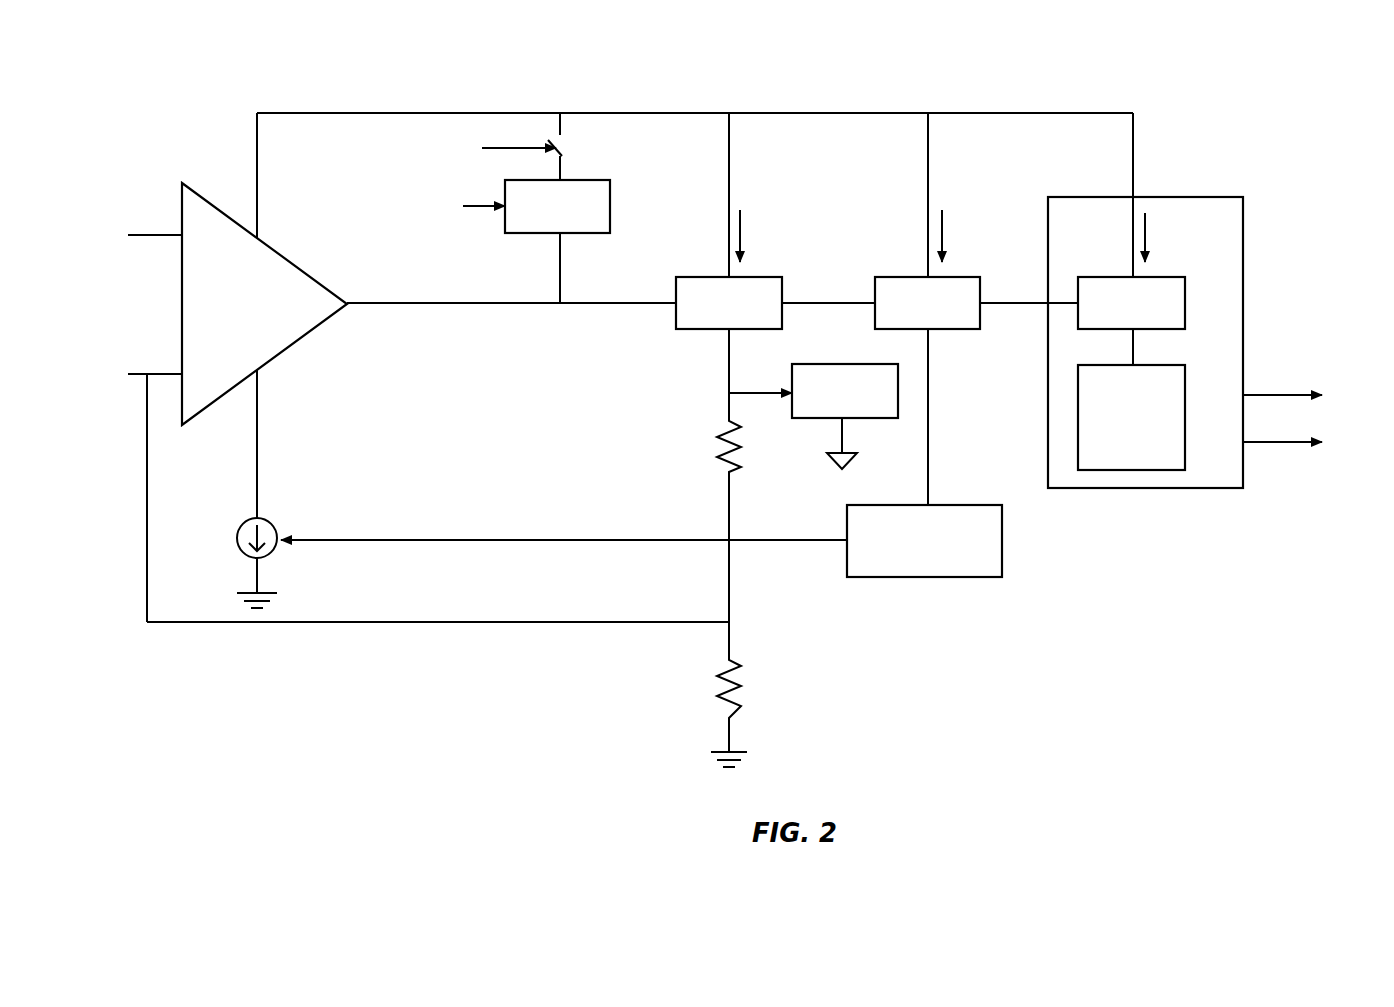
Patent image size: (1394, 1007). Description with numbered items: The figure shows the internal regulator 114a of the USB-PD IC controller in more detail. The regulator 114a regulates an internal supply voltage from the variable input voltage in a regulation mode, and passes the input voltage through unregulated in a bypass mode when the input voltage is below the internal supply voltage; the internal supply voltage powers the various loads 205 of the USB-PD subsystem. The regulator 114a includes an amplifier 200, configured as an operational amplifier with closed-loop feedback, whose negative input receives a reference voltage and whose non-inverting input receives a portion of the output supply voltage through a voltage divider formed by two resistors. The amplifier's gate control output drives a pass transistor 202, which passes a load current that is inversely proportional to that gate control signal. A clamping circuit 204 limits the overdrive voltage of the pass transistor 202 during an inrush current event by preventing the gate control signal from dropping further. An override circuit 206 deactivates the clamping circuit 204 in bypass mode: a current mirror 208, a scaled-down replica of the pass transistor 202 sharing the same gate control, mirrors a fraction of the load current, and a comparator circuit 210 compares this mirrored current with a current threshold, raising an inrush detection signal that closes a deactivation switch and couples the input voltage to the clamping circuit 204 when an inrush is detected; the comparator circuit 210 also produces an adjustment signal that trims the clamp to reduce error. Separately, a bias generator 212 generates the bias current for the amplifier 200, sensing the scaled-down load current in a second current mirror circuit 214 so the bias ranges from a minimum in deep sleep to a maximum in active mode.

The internal regulator 114a is at (155, 78).
The amplifier 200 is at (245, 318).
The pass transistor 202 is at (748, 314).
The clamping circuit 204 is at (576, 217).
The loads 205 is at (864, 401).
The override circuit 206 is at (1098, 233).
The current mirror 208 is at (1150, 314).
The comparator circuit 210 is at (1150, 427).
The bias generator 212 is at (985, 529).
The second current mirror circuit 214 is at (948, 314).